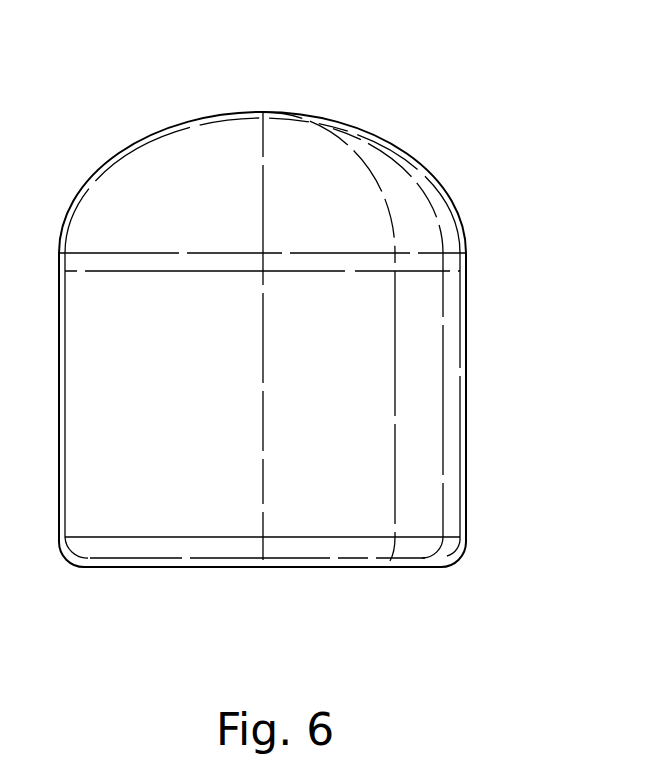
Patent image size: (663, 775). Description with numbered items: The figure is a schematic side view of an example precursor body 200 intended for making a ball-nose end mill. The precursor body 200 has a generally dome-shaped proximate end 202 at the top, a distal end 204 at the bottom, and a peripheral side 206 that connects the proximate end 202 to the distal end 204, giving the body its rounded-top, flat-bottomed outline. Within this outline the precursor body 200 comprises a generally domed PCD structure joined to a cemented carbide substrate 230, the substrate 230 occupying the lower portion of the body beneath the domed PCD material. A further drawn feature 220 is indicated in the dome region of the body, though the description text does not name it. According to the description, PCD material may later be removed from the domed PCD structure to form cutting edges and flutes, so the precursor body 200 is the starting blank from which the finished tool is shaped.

The precursor body 200 is at (325, 341).
The proximate end 202 is at (270, 90).
The distal end 204 is at (263, 582).
The peripheral side 206 is at (502, 211).
The inner dome / rim 220 is at (395, 170).
The cemented carbide substrate 230 is at (432, 412).